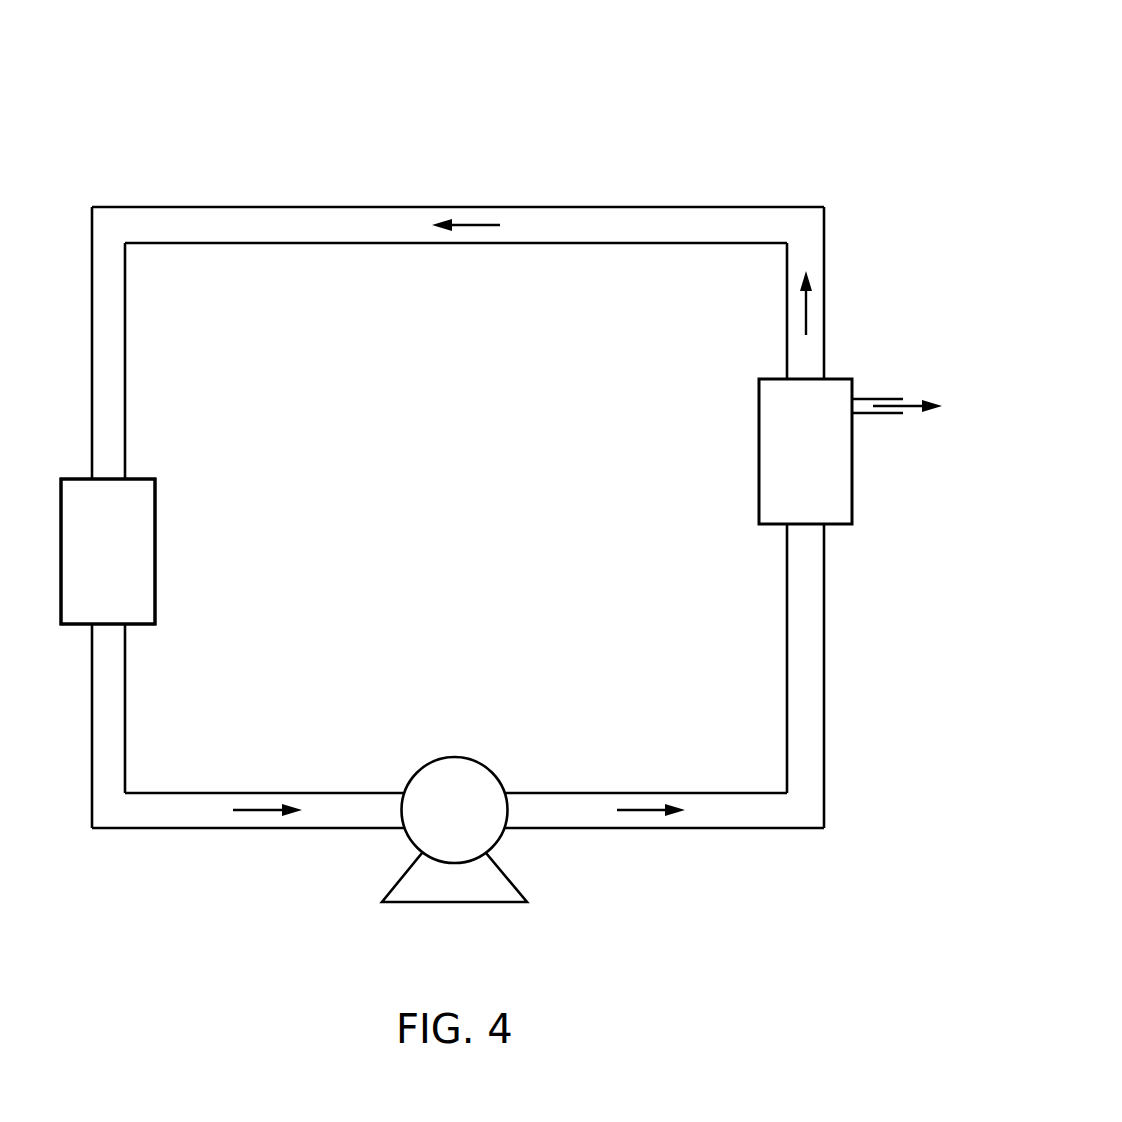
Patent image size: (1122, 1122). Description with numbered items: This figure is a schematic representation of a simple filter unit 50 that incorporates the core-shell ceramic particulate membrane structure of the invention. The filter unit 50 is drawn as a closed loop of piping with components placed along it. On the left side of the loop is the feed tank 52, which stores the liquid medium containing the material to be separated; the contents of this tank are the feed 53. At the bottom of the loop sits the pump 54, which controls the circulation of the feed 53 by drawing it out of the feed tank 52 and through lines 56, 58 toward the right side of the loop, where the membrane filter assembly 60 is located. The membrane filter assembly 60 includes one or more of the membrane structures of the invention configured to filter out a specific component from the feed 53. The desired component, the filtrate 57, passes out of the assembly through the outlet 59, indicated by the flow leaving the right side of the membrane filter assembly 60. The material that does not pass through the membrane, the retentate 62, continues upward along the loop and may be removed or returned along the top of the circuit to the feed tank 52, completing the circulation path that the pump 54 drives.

The filter unit 50 is at (696, 65).
The feed tank 52 is at (155, 550).
The feed 53 is at (120, 527).
The pump 54 is at (453, 757).
The line 56 is at (125, 708).
The filtrate 57 is at (906, 399).
The line 58 is at (663, 793).
The outlet 59 is at (874, 415).
The membrane filter assembly 60 is at (759, 452).
The retentate 62 is at (805, 312).